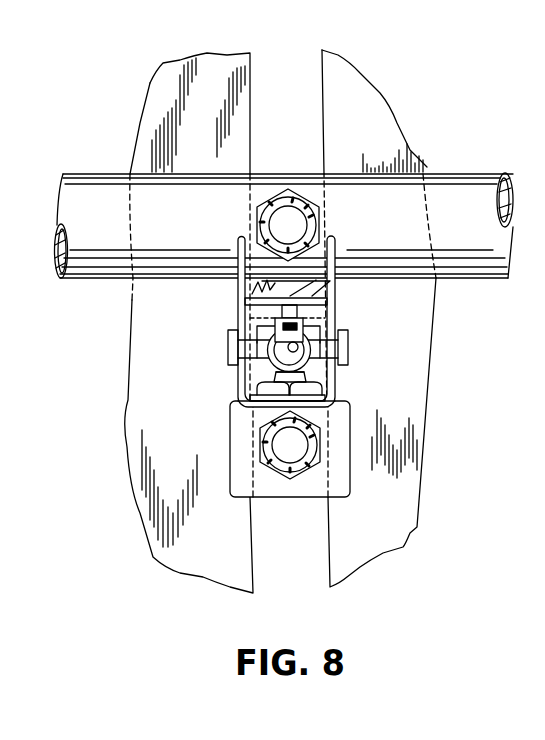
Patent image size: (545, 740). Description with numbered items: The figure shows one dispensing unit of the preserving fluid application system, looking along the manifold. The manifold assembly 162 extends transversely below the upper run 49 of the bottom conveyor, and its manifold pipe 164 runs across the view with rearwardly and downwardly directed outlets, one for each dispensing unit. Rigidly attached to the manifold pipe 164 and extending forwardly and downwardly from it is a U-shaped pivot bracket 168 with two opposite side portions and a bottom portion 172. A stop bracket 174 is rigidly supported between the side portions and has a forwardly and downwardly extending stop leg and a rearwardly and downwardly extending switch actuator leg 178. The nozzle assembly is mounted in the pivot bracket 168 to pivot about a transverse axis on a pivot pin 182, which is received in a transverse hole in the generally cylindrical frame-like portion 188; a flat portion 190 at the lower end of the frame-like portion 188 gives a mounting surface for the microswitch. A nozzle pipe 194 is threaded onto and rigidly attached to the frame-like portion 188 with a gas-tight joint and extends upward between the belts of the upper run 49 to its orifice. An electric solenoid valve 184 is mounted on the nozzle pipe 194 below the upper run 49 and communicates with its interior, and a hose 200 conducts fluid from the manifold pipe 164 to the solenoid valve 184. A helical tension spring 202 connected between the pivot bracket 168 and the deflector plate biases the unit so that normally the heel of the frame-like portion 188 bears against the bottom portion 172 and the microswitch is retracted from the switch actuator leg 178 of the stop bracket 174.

The upper run 49 is at (206, 108).
The manifold assembly 162 is at (432, 169).
The manifold pipe 164 is at (113, 193).
The U-shaped pivot bracket 168 is at (236, 374).
The bottom portion 172 is at (256, 408).
The stop bracket 174 is at (298, 289).
The switch actuator leg 178 is at (313, 294).
The pivot pin 182 is at (233, 342).
The electric solenoid valve 184 is at (290, 500).
The frame-like portion 188 is at (280, 346).
The flat portion 190 is at (311, 366).
The nozzle pipe 194 is at (313, 356).
The hose 200 is at (295, 192).
The helical tension spring 202 is at (250, 283).